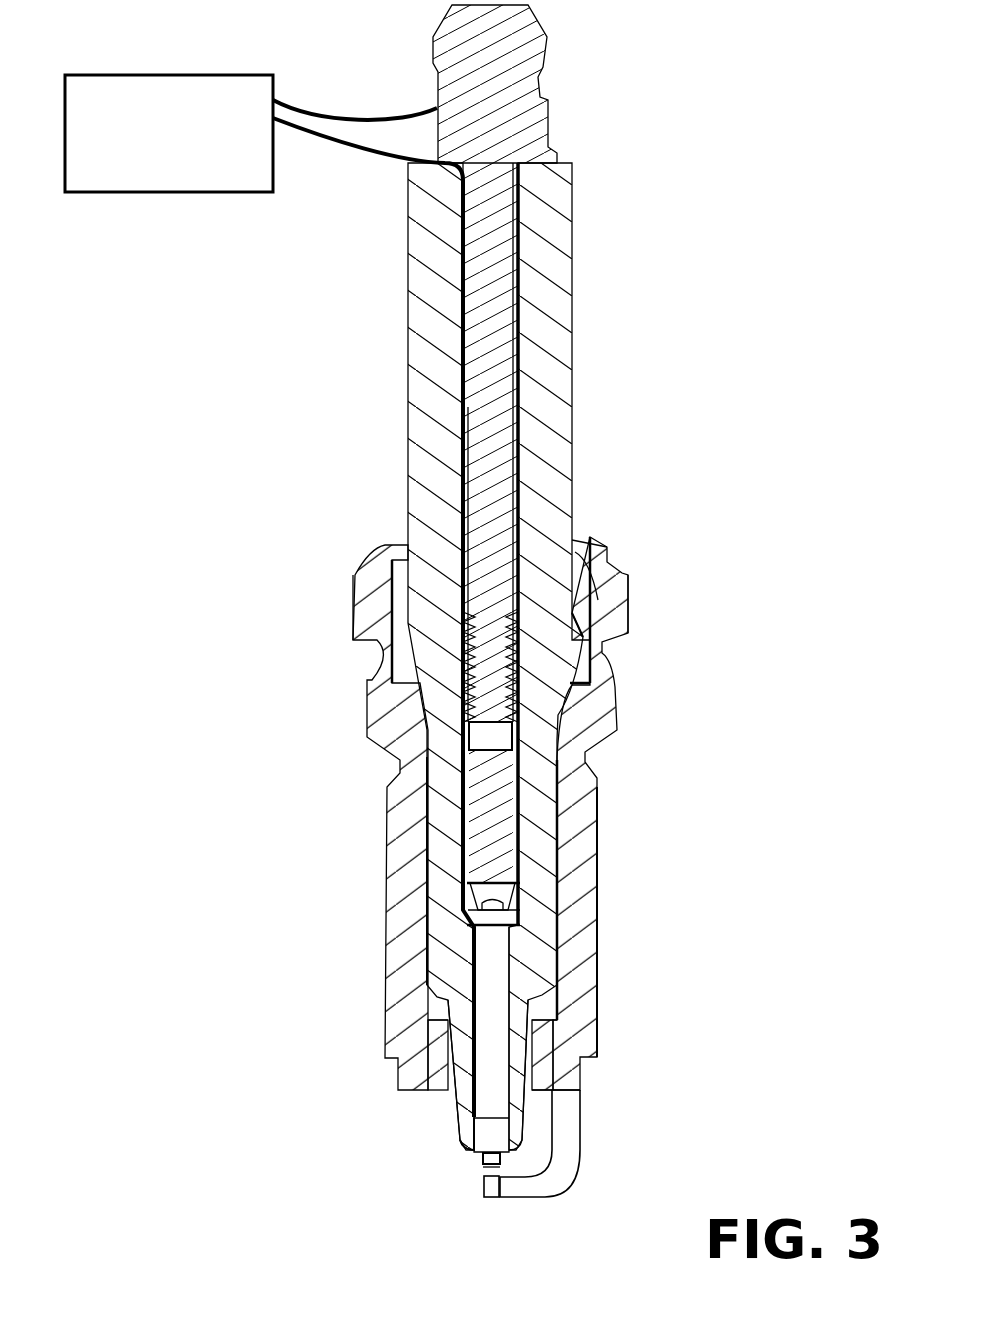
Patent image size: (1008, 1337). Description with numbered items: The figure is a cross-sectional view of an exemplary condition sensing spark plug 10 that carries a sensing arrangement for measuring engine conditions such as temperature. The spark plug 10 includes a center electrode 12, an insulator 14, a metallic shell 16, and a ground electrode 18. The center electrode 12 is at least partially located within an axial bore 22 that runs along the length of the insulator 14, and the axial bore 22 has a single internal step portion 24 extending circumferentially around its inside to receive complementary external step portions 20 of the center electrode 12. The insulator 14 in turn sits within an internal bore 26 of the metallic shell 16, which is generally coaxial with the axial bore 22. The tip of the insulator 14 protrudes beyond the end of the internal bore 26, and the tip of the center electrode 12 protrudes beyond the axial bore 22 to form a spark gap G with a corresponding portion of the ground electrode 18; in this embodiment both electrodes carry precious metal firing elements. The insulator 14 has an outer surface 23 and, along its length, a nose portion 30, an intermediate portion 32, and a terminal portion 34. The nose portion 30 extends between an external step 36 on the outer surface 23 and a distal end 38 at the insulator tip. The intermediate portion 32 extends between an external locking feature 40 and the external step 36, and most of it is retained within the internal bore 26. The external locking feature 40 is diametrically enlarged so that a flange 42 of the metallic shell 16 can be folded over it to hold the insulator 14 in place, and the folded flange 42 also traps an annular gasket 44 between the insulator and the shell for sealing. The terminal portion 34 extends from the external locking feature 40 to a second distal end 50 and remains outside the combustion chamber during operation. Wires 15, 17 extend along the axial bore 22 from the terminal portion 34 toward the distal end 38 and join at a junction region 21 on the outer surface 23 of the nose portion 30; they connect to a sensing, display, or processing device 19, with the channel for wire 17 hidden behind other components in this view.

The spark plug 10 is at (684, 800).
The center electrode 12 is at (546, 983).
The insulator 14 is at (568, 915).
The wiring 15 is at (360, 155).
The metallic shell 16 is at (606, 860).
The wiring 17 is at (393, 113).
The ground electrode 18 is at (592, 1130).
The sensing device 19 is at (144, 148).
The external step portions 20 is at (529, 968).
The junction region 21 is at (463, 1128).
The axial bore 22 is at (460, 958).
The outer surface 23 is at (535, 1060).
The internal step portion 24 is at (460, 912).
The internal bore 26 is at (455, 910).
The nose portion 30 is at (440, 1055).
The intermediate portion 32 is at (418, 805).
The terminal portion 34 is at (398, 355).
The external step 36 is at (555, 1033).
The distal end 38 is at (462, 1143).
The external locking feature 40 is at (627, 578).
The flange 42 is at (583, 536).
The gasket 44 is at (586, 552).
The second distal end 50 is at (573, 163).
The spark gap G is at (508, 1168).